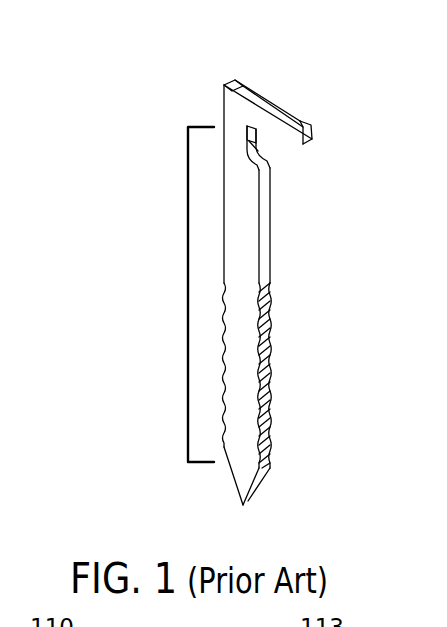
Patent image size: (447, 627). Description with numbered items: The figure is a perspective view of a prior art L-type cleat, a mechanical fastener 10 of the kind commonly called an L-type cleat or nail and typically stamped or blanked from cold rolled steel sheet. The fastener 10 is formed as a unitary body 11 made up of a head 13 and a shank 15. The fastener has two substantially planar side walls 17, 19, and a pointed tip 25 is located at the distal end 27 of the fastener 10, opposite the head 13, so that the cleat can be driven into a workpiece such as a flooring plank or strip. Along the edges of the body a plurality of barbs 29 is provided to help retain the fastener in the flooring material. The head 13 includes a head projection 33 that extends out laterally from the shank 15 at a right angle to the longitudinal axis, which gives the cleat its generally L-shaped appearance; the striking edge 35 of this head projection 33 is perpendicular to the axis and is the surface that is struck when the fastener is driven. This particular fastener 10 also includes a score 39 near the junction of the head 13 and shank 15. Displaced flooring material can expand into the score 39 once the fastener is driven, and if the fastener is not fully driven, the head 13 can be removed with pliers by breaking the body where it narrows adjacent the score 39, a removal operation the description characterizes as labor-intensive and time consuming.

The mechanical fastener 10 is at (132, 117).
The unitary body 11 is at (188, 294).
The head 13 is at (297, 81).
The shank 15 is at (300, 225).
The side wall 17 is at (240, 286).
The side wall 19 is at (271, 256).
The pointed tip 25 is at (246, 503).
The distal end 27 is at (246, 508).
The barbs 29 is at (295, 371).
The head projection 33 is at (307, 124).
The striking edge 35 is at (237, 81).
The score 39 is at (255, 140).